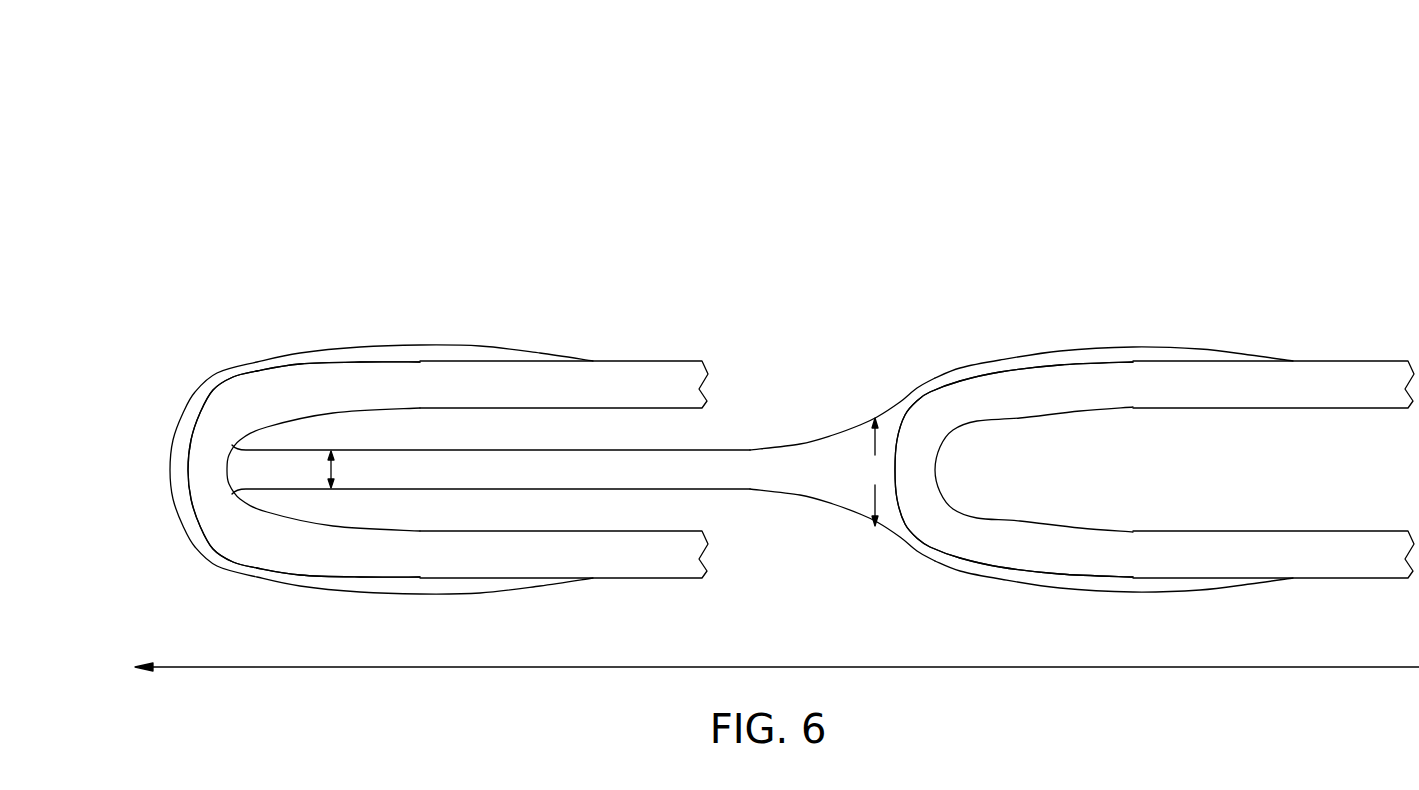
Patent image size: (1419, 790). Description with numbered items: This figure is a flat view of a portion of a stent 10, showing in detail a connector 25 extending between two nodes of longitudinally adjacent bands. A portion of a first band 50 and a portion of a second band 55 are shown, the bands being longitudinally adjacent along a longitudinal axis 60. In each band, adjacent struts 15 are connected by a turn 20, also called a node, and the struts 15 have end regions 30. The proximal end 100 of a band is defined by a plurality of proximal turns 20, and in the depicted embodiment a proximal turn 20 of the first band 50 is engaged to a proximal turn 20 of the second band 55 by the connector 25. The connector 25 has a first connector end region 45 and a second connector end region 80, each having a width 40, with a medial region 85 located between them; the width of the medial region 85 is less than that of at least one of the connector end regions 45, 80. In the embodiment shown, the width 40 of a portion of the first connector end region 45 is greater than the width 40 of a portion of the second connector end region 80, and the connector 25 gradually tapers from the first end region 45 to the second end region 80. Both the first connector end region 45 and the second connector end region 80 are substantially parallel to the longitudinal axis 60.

The stent 10 is at (860, 188).
The struts 15 is at (637, 378).
The turn 20 is at (203, 468).
The connector 25 is at (720, 480).
The end regions 30 is at (297, 387).
The width 40 is at (334, 467).
The first connector end region 45 is at (838, 465).
The first band 50 is at (438, 278).
The second band 55 is at (1307, 294).
The longitudinal axis 60 is at (802, 665).
The second connector end region 80 is at (228, 485).
The medial region 85 is at (563, 480).
The proximal end 100 is at (180, 418).